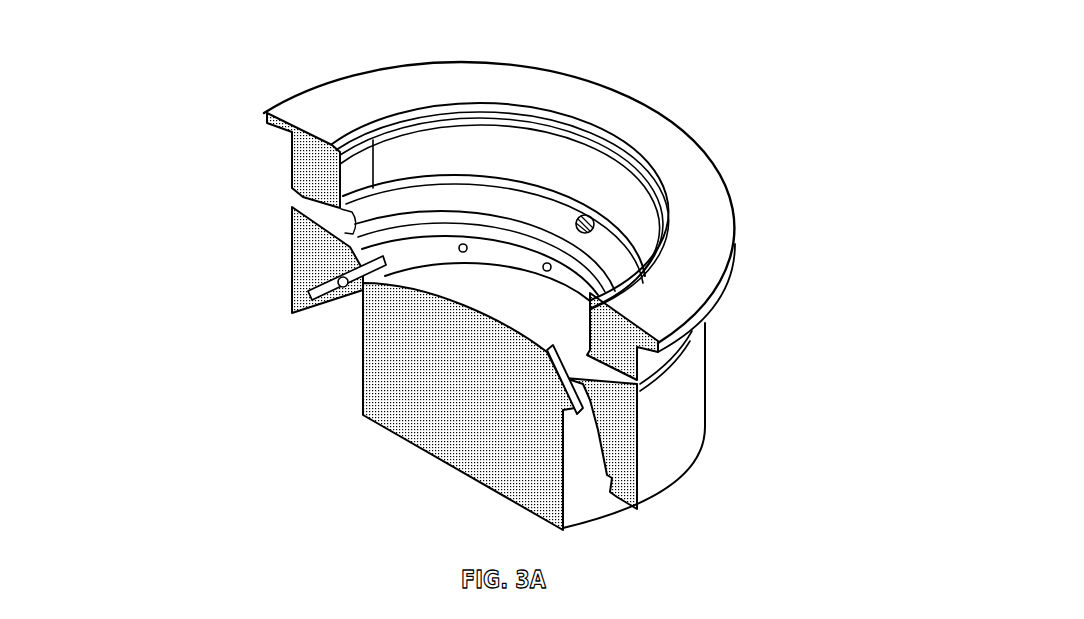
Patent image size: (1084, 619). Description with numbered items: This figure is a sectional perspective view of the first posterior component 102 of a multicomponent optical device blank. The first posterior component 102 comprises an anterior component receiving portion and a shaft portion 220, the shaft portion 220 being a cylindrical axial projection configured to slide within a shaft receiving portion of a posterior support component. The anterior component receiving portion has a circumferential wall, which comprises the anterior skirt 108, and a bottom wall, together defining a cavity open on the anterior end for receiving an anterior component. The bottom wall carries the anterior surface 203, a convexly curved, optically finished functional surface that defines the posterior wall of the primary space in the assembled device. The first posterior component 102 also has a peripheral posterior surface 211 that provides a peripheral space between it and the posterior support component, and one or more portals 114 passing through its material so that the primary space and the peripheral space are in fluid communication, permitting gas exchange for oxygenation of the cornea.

The first posterior component 102 is at (135, 62).
The anterior surface 203 is at (493, 290).
The portal 114 is at (360, 270).
The peripheral posterior surface 211 is at (337, 282).
The shaft portion 220 is at (453, 397).
The anterior skirt 108 is at (620, 440).